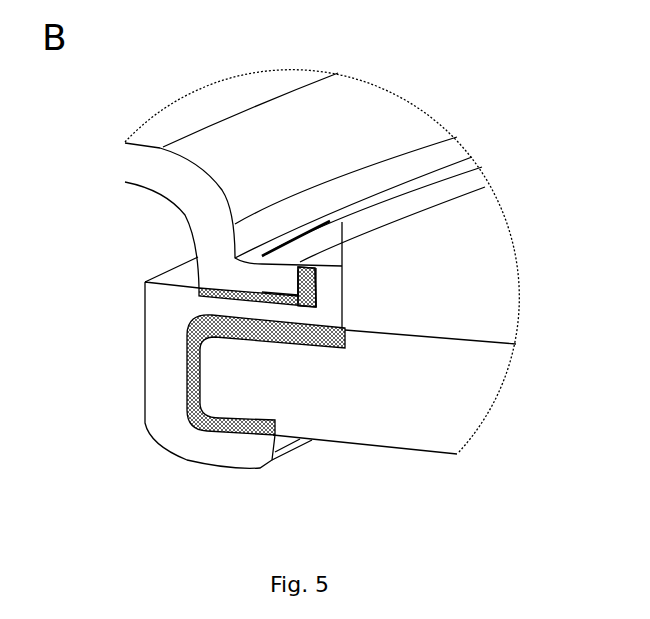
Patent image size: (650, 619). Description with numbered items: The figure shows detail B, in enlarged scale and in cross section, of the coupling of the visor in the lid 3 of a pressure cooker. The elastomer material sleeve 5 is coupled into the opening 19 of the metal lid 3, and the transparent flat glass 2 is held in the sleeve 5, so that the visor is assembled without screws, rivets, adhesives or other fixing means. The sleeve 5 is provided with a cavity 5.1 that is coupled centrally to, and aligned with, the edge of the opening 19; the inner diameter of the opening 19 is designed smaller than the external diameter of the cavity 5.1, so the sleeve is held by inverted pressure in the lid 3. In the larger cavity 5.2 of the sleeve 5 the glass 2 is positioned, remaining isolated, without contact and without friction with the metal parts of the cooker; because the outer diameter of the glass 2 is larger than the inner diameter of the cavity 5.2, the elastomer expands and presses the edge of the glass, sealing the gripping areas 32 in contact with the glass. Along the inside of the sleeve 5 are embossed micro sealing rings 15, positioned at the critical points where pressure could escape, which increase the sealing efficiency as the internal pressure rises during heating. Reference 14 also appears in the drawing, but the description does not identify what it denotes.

The glass 2 is at (418, 378).
The lid 3 is at (233, 237).
The elastomer material sleeve 5 is at (318, 250).
The cavity 5.1 is at (299, 280).
The cavity 5.2 is at (197, 367).
The flange 14 is at (200, 268).
The micro sealing rings 15 is at (283, 293).
The opening 19 is at (317, 279).
The gripping areas 32 is at (187, 327).